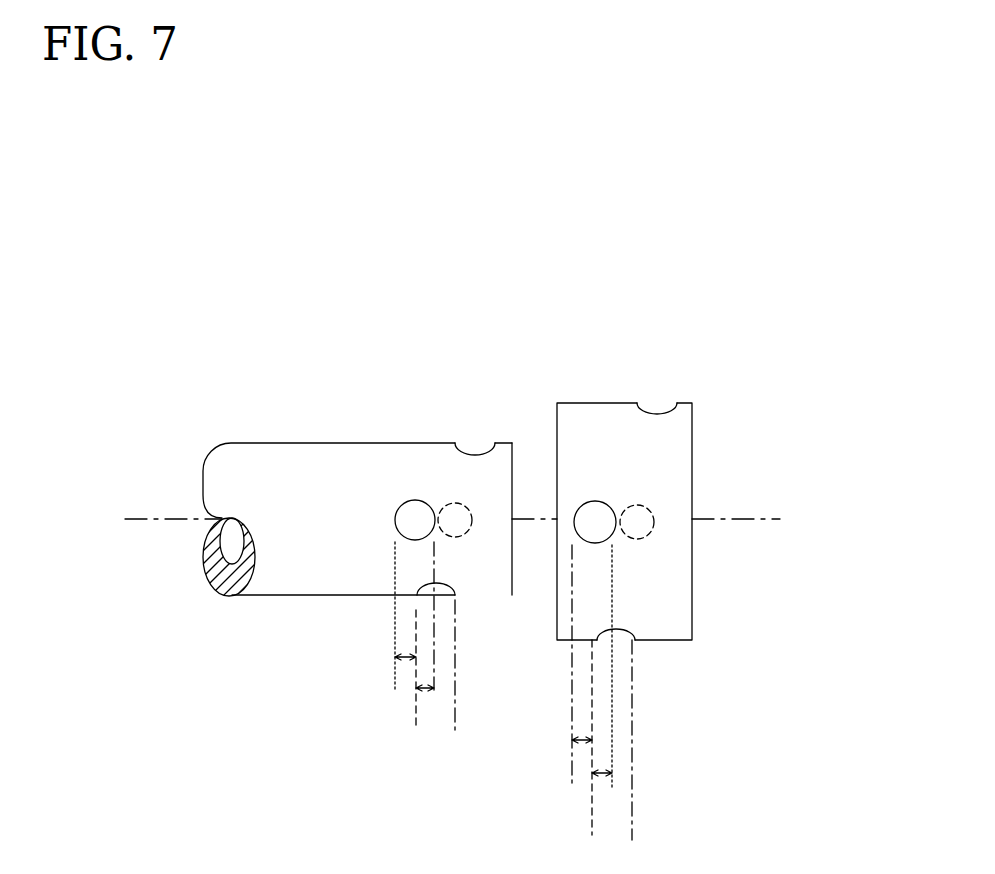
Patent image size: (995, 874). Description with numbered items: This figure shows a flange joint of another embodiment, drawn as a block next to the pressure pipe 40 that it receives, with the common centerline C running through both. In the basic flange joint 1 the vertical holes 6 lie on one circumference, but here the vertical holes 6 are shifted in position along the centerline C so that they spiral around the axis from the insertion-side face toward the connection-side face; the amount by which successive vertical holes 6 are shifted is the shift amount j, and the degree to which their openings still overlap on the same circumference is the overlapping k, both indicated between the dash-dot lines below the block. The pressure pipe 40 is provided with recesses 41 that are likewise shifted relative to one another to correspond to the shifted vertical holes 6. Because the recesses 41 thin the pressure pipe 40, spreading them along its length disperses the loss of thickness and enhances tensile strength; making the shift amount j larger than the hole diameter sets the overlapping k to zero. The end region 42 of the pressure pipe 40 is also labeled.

The flange joint 1 is at (605, 306).
The vertical holes 6 is at (590, 502).
The pressure pipe 40 is at (300, 456).
The recesses 41 is at (415, 500).
The end face of cylindrical body 42 is at (512, 595).
The centerline C is at (452, 507).
The shift amount j is at (405, 660).
The overlapping k is at (420, 692).